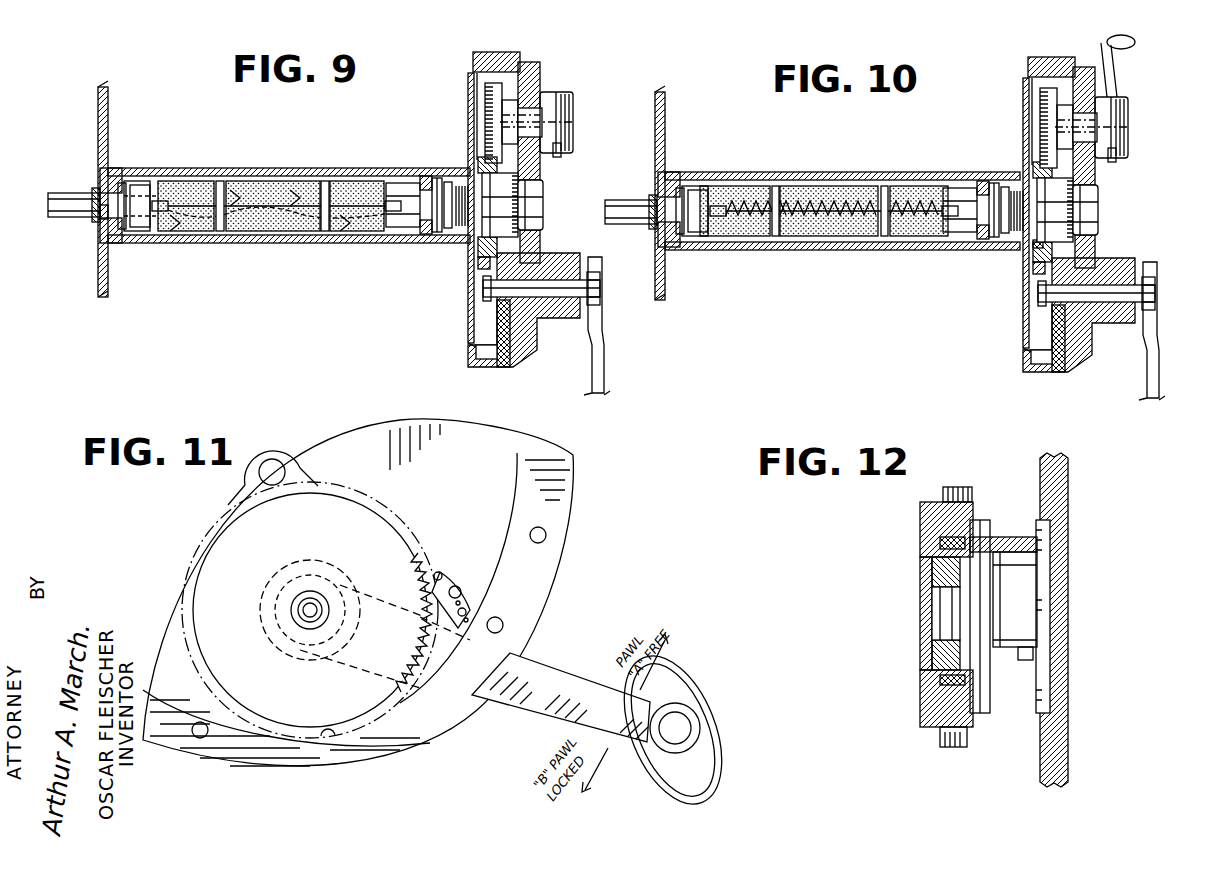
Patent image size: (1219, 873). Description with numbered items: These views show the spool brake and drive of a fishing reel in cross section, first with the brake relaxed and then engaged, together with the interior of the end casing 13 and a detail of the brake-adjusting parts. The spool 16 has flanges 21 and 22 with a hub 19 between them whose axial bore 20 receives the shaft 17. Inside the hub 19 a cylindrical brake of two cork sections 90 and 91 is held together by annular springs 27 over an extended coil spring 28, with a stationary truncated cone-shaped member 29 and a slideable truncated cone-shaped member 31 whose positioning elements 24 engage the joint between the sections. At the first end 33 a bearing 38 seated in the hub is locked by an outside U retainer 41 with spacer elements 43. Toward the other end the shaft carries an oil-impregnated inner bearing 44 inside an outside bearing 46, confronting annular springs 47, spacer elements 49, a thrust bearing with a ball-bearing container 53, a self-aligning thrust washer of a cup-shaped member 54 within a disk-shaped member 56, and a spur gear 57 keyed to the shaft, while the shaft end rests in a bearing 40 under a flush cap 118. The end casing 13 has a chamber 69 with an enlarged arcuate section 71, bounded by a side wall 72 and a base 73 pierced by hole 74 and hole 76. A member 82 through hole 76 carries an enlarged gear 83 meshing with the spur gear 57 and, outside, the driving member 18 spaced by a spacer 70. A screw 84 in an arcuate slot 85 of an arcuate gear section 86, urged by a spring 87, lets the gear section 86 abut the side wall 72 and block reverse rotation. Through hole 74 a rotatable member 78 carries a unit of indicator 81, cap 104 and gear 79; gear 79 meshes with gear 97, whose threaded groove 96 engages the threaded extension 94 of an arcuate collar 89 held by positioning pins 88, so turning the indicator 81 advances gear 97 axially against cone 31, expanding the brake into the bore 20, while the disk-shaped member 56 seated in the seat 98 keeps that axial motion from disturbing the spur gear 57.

In FIG. 9, the end casing 13 is at (500, 210).
In FIG. 10, the end casing 13 is at (1041, 218).
In FIG. 11, the end casing 13 is at (397, 587).
In FIG. 12, the end casing 13 is at (1076, 719).
In FIG. 9, the spool 16 is at (292, 160).
In FIG. 10, the spool 16 is at (849, 258).
In FIG. 9, the shaft 17 is at (268, 243).
In FIG. 10, the shaft 17 is at (868, 250).
In FIG. 9, the driving member 18 is at (604, 365).
In FIG. 10, the driving member 18 is at (1166, 331).
In FIG. 11, the driving member 18 is at (540, 670).
In FIG. 9, the hub 19 is at (270, 170).
In FIG. 10, the hub 19 is at (896, 172).
In FIG. 9, the axial bore 20 is at (245, 233).
In FIG. 10, the axial bore 20 is at (812, 238).
In FIG. 9, the spool flange 21 is at (98, 115).
In FIG. 10, the spool flange 21 is at (665, 112).
In FIG. 9, the spool flange 22 is at (476, 82).
In FIG. 10, the spool flange 22 is at (1002, 77).
In FIG. 9, the positioning elements 24 is at (160, 212).
In FIG. 10, the positioning elements 24 is at (716, 217).
In FIG. 9, the annular springs 27 is at (220, 183).
In FIG. 10, the annular springs 27 is at (775, 186).
In FIG. 9, the coil spring 28 is at (311, 243).
In FIG. 10, the coil spring 28 is at (812, 174).
In FIG. 9, the truncated cone-shaped member 29 is at (130, 184).
In FIG. 10, the truncated cone-shaped member 29 is at (688, 188).
In FIG. 9, the truncated cone-shaped member 31 is at (390, 186).
In FIG. 10, the truncated cone-shaped member 31 is at (950, 192).
In FIG. 9, the first end 33 is at (70, 193).
In FIG. 10, the first end 33 is at (636, 200).
In FIG. 9, the bearing 38 is at (112, 170).
In FIG. 10, the bearing 38 is at (670, 247).
In FIG. 11, the bearing 40 is at (280, 460).
In FIG. 9, the outside U retainer 41 is at (96, 212).
In FIG. 10, the outside U retainer 41 is at (652, 218).
In FIG. 9, the spacer elements 43 is at (104, 236).
In FIG. 9, the inner bearing 44 is at (426, 178).
In FIG. 10, the inner bearing 44 is at (982, 183).
In FIG. 9, the outside bearing 46 is at (438, 180).
In FIG. 10, the outside bearing 46 is at (994, 185).
In FIG. 9, the annular springs 47 is at (436, 240).
In FIG. 10, the annular springs 47 is at (1005, 188).
In FIG. 9, the spacer elements 49 is at (458, 230).
In FIG. 10, the spacer elements 49 is at (1013, 234).
In FIG. 9, the ball-bearing container 53 is at (482, 160).
In FIG. 10, the ball-bearing container 53 is at (1036, 165).
In FIG. 12, the cup-shaped member 54 is at (935, 595).
In FIG. 10, the disk-shaped member 56 is at (1036, 250).
In FIG. 12, the disk-shaped member 56 is at (935, 650).
In FIG. 9, the spur gear 57 is at (520, 206).
In FIG. 10, the spur gear 57 is at (1083, 204).
In FIG. 9, the chamber 69 is at (474, 325).
In FIG. 10, the chamber 69 is at (990, 215).
In FIG. 11, the chamber 69 is at (498, 455).
In FIG. 9, the spacer 70 is at (556, 306).
In FIG. 10, the spacer 70 is at (1079, 315).
In FIG. 9, the enlarged arcuate section 71 is at (482, 353).
In FIG. 10, the enlarged arcuate section 71 is at (1007, 358).
In FIG. 11, the enlarged arcuate section 71 is at (336, 760).
In FIG. 9, the side wall 72 is at (502, 54).
In FIG. 10, the side wall 72 is at (1033, 52).
In FIG. 11, the side wall 72 is at (560, 495).
In FIG. 9, the base 73 is at (541, 170).
In FIG. 10, the base 73 is at (1104, 167).
In FIG. 11, the base 73 is at (436, 470).
In FIG. 12, the base 73 is at (1060, 556).
In FIG. 9, the hole 74 is at (528, 110).
In FIG. 10, the hole 74 is at (1097, 104).
In FIG. 9, the hole 76 is at (548, 286).
In FIG. 10, the hole 76 is at (1096, 273).
In FIG. 9, the rotatable member 78 is at (510, 106).
In FIG. 10, the rotatable member 78 is at (1058, 84).
In FIG. 9, the gear 79 is at (490, 102).
In FIG. 10, the gear 79 is at (1015, 127).
In FIG. 10, the indicator 81 is at (1136, 61).
In FIG. 9, the member 82 is at (601, 286).
In FIG. 10, the member 82 is at (1171, 293).
In FIG. 11, the member 82 is at (310, 592).
In FIG. 9, the enlarged gear 83 is at (508, 340).
In FIG. 10, the enlarged gear 83 is at (1087, 338).
In FIG. 11, the enlarged gear 83 is at (440, 708).
In FIG. 11, the screw 84 is at (458, 590).
In FIG. 11, the elongated arcuate slot 85 is at (492, 620).
In FIG. 11, the arcuate gear section 86 is at (440, 575).
In FIG. 11, the spring 87 is at (466, 615).
In FIG. 12, the positioning pins 88 is at (1026, 661).
In FIG. 9, the arcuate collar 89 is at (561, 150).
In FIG. 10, the arcuate collar 89 is at (1134, 147).
In FIG. 12, the arcuate collar 89 is at (1022, 537).
In FIG. 9, the brake section 90 is at (172, 184).
In FIG. 10, the brake section 90 is at (730, 188).
In FIG. 9, the brake section 91 is at (190, 232).
In FIG. 10, the brake section 91 is at (744, 237).
In FIG. 12, the threaded extension 94 is at (965, 712).
In FIG. 12, the threaded groove 96 is at (938, 690).
In FIG. 9, the gear 97 is at (482, 262).
In FIG. 10, the gear 97 is at (1011, 294).
In FIG. 12, the gear 97 is at (948, 490).
In FIG. 12, the seat 98 is at (938, 568).
In FIG. 9, the cap 104 is at (572, 92).
In FIG. 10, the cap 104 is at (1139, 126).
In FIG. 9, the cap 118 is at (545, 200).
In FIG. 10, the cap 118 is at (1113, 210).